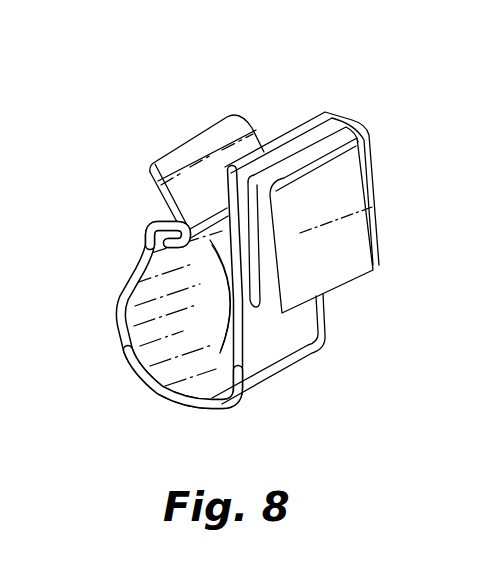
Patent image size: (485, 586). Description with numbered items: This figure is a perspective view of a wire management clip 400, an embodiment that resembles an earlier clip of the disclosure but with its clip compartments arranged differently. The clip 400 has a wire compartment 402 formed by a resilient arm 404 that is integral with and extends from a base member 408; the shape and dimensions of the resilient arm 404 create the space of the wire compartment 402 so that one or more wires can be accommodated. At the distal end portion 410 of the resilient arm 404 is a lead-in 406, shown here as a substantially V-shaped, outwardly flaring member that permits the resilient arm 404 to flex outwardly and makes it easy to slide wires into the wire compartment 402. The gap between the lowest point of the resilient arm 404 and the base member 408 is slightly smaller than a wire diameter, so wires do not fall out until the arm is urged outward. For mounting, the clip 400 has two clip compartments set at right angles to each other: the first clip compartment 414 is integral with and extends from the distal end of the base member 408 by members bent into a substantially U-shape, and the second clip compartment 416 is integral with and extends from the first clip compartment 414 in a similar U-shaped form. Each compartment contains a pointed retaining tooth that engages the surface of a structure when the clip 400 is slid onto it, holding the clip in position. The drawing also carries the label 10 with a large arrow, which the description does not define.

The pipe / conduit 10 is at (108, 349).
The clip 400 is at (200, 224).
The wire compartment 402 is at (165, 339).
The resilient arm 404 is at (154, 300).
The lead-in 406 is at (203, 140).
The base member 408 is at (295, 259).
The distal end portion 410 is at (145, 231).
The first clip compartment 414 is at (231, 249).
The second clip compartment 416 is at (262, 288).